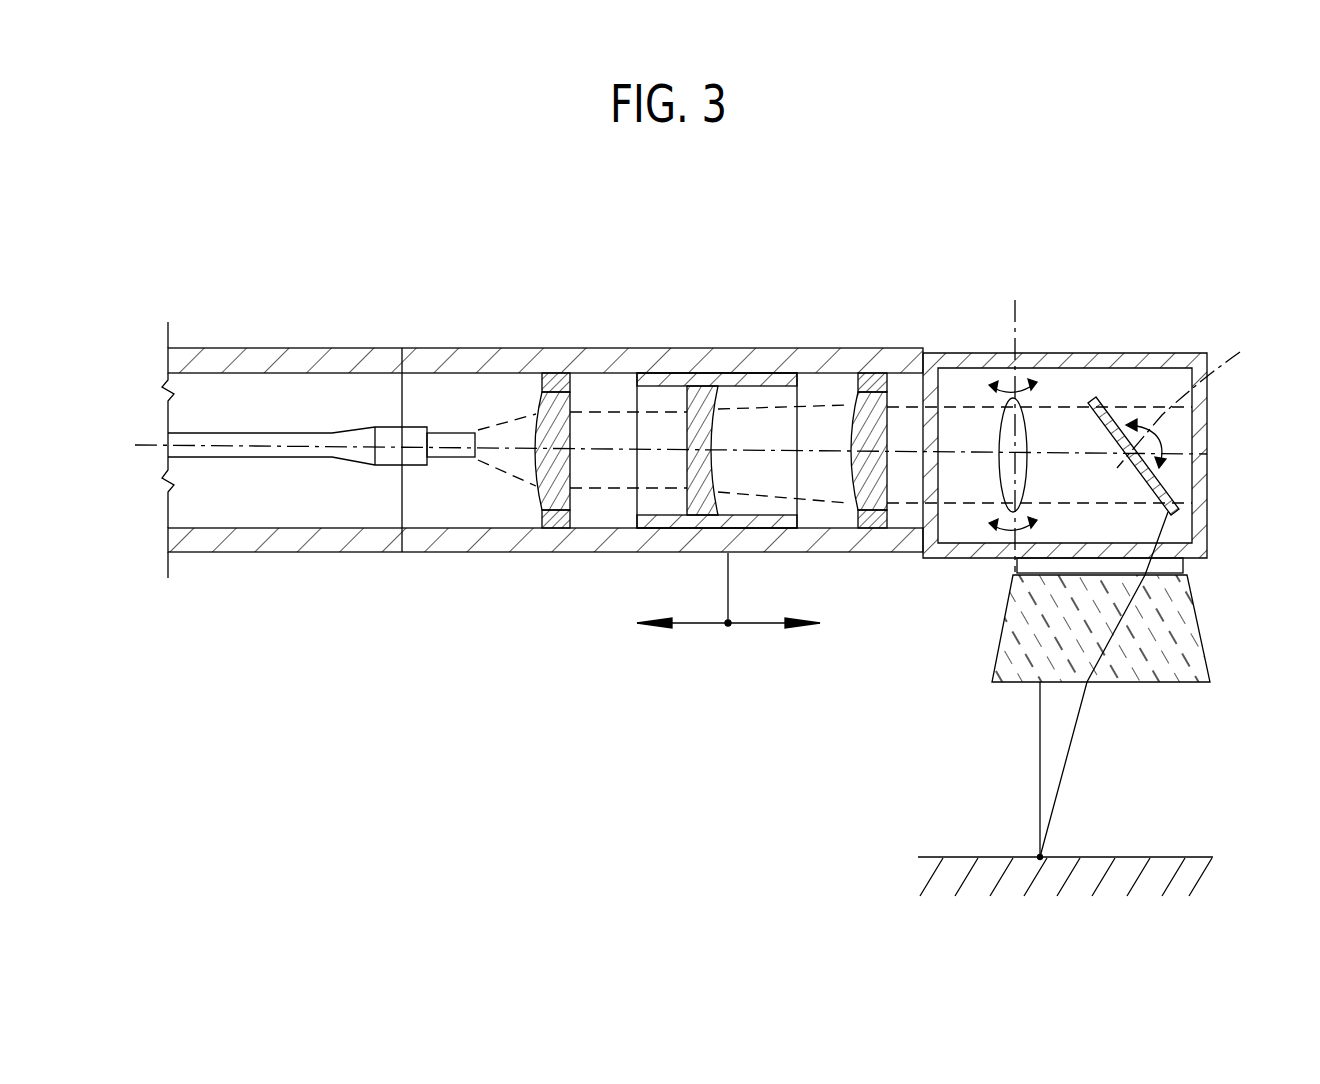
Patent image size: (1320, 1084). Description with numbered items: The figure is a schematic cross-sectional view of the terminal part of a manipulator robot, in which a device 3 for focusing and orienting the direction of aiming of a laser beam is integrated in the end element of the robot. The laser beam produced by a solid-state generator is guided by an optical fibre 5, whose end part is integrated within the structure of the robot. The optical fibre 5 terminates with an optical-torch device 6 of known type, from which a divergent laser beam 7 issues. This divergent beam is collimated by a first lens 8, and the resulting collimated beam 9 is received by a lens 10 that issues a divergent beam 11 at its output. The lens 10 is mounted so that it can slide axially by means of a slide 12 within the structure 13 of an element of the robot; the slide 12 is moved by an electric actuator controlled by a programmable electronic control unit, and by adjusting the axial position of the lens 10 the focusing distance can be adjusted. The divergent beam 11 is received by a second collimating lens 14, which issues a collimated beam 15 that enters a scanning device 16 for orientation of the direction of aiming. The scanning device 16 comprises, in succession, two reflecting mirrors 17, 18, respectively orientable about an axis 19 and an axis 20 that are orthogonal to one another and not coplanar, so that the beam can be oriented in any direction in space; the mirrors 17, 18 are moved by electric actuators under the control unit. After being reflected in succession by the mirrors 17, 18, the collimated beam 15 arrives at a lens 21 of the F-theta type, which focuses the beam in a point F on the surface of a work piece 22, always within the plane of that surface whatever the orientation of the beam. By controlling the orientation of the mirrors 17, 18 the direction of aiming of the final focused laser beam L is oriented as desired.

The focusing and aiming device 3 is at (505, 292).
The optical fibre 5 is at (290, 437).
The optical-torch device 6 is at (415, 428).
The divergent laser beam 7 is at (517, 468).
The first lens 8 is at (572, 403).
The collimated beam 9 is at (610, 482).
The lens 10 is at (672, 403).
The divergent beam 11 is at (820, 417).
The slide 12 is at (805, 525).
The structure 13 is at (470, 545).
The second collimating lens 14 is at (891, 478).
The collimated beam 15 is at (946, 420).
The scanning device 16 is at (1175, 350).
The reflecting mirror 17 is at (1043, 417).
The reflecting mirror 18 is at (1165, 484).
The axis 19 is at (1022, 300).
The axis 20 is at (1189, 400).
The lens 21 is at (1007, 638).
The work piece 22 is at (1137, 848).
The final focused laser beam L is at (1058, 732).
The focal point F is at (1040, 856).